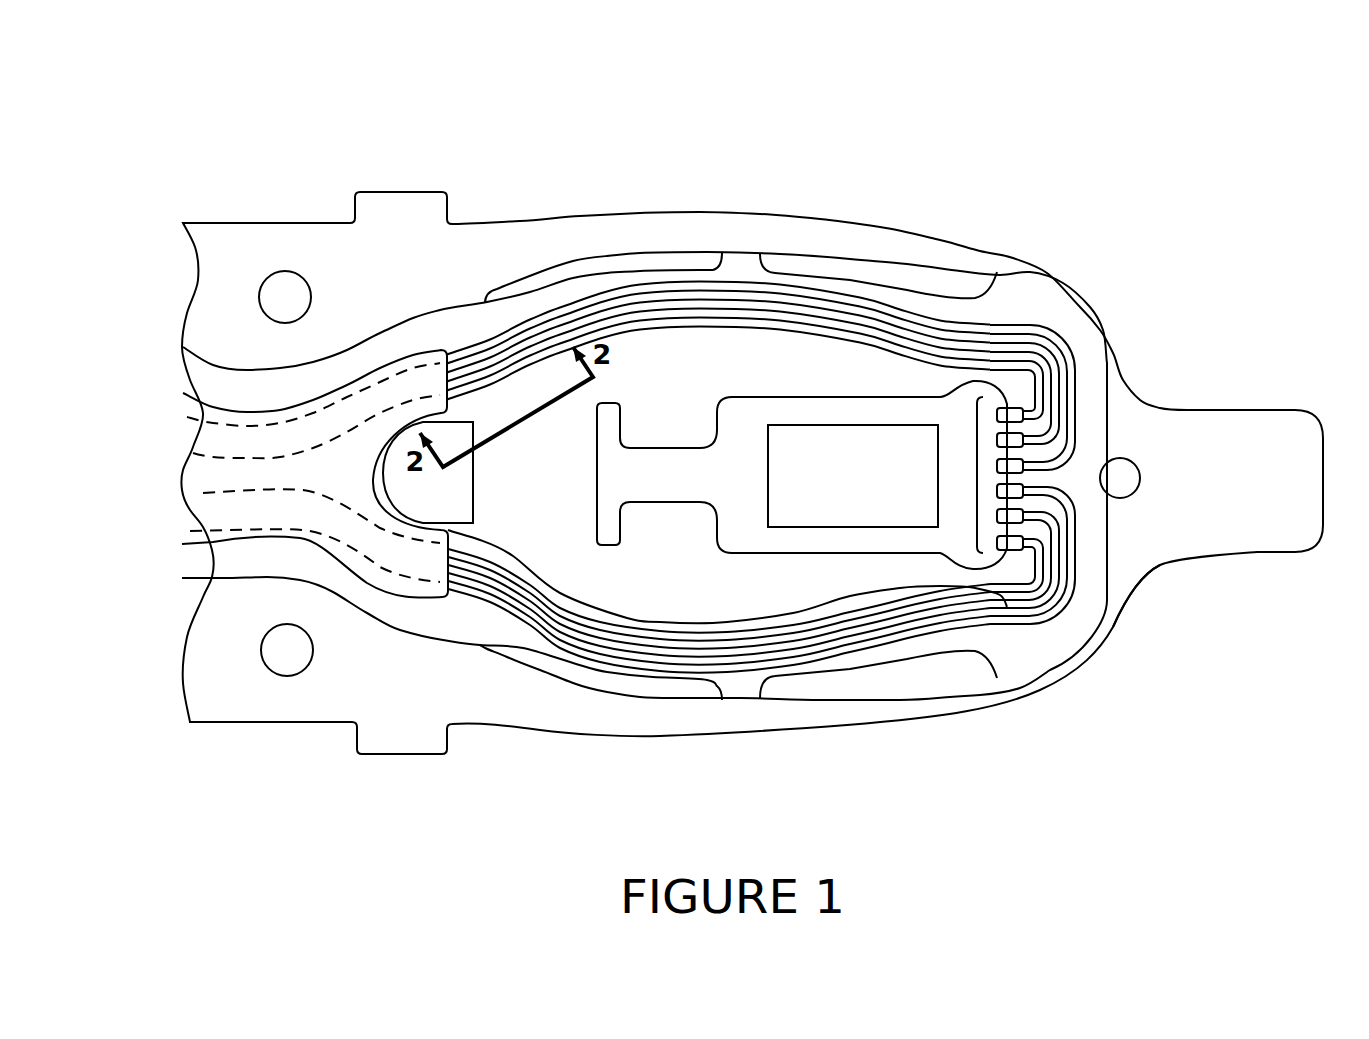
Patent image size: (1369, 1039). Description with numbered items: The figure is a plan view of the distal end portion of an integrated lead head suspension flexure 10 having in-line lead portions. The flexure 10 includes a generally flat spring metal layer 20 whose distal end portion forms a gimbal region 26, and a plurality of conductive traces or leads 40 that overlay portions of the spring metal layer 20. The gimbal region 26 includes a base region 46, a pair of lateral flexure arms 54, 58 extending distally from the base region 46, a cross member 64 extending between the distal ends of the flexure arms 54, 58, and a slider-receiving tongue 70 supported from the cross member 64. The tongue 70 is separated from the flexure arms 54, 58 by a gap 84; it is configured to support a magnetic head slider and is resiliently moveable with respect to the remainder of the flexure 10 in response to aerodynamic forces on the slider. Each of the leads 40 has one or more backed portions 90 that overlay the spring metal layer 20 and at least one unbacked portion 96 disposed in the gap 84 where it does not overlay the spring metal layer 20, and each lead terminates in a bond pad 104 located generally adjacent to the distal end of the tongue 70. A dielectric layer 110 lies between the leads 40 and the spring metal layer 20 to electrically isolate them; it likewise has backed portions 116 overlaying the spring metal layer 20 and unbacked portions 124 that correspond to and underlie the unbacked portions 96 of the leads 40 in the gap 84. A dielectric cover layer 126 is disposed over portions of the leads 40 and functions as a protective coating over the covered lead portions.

The integrated lead head suspension flexure 10 is at (353, 78).
The spring metal layer 20 is at (752, 431).
The gimbal region 26 is at (838, 202).
The conductive traces or leads 40 is at (718, 461).
The base region 46 is at (447, 687).
The lateral flexure arm 54 is at (930, 240).
The lateral flexure arm 58 is at (890, 720).
The cross member 64 is at (1113, 630).
The slider-receiving tongue 70 is at (915, 553).
The gap 84 is at (860, 380).
The backed portions 90 is at (418, 352).
The unbacked portion 96 is at (691, 278).
The bond pad 104 is at (1287, 343).
The dielectric layer 110 is at (523, 542).
The backed portions 116 is at (707, 494).
The unbacked portions 124 is at (958, 300).
The dielectric cover layer 126 is at (337, 558).